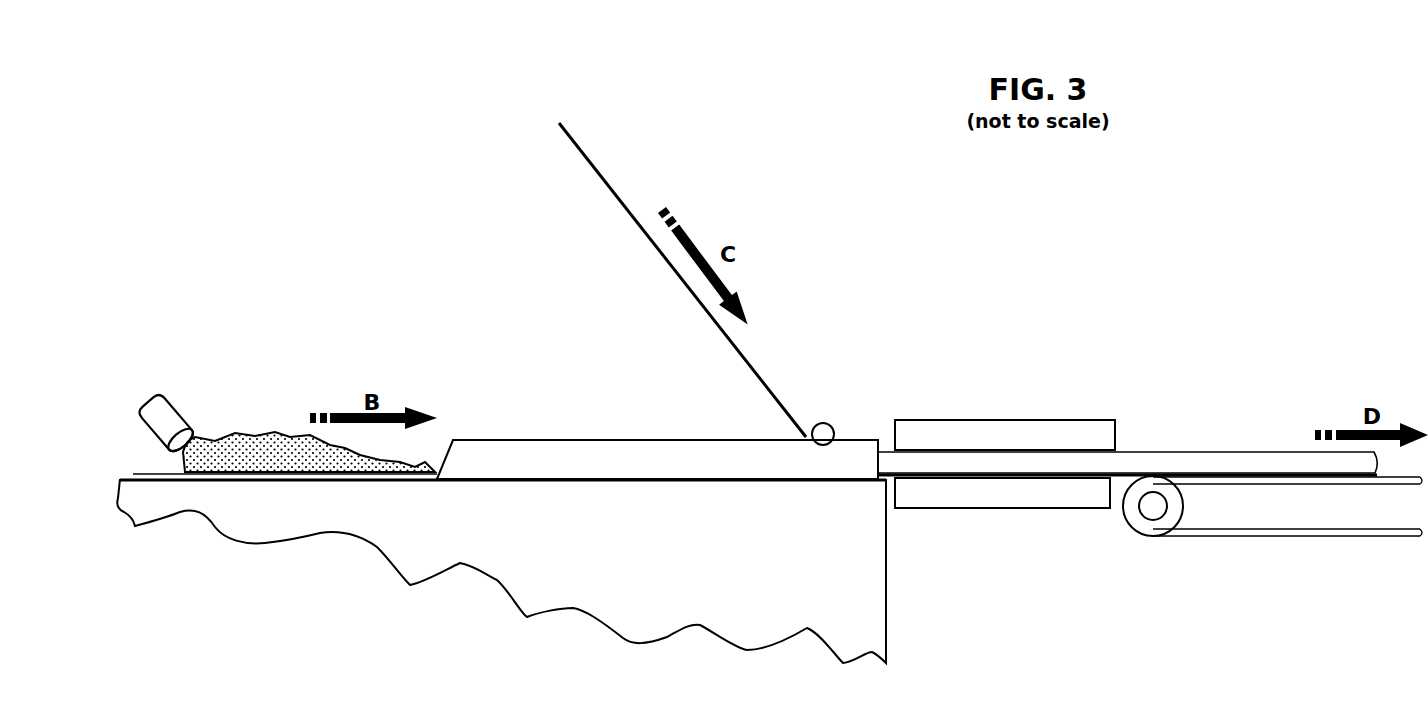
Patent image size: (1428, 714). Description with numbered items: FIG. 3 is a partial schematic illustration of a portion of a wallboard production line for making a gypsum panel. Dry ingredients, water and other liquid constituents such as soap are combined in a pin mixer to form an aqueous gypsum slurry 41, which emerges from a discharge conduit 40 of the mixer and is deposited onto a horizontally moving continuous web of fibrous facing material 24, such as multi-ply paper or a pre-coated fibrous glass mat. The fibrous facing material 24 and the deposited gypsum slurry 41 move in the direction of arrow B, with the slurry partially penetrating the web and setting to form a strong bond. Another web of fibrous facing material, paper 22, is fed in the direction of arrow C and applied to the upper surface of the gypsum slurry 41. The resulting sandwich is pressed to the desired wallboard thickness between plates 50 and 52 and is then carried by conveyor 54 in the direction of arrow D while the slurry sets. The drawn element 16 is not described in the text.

The continuous strip / sheet 16 is at (1230, 463).
The paper 22 is at (615, 185).
The fibrous facing material 24 is at (140, 472).
The discharge conduit 40 is at (170, 393).
The gypsum slurry 41 is at (290, 431).
The plate 50 is at (1022, 420).
The plate 52 is at (995, 503).
The conveyor 54 is at (1292, 538).